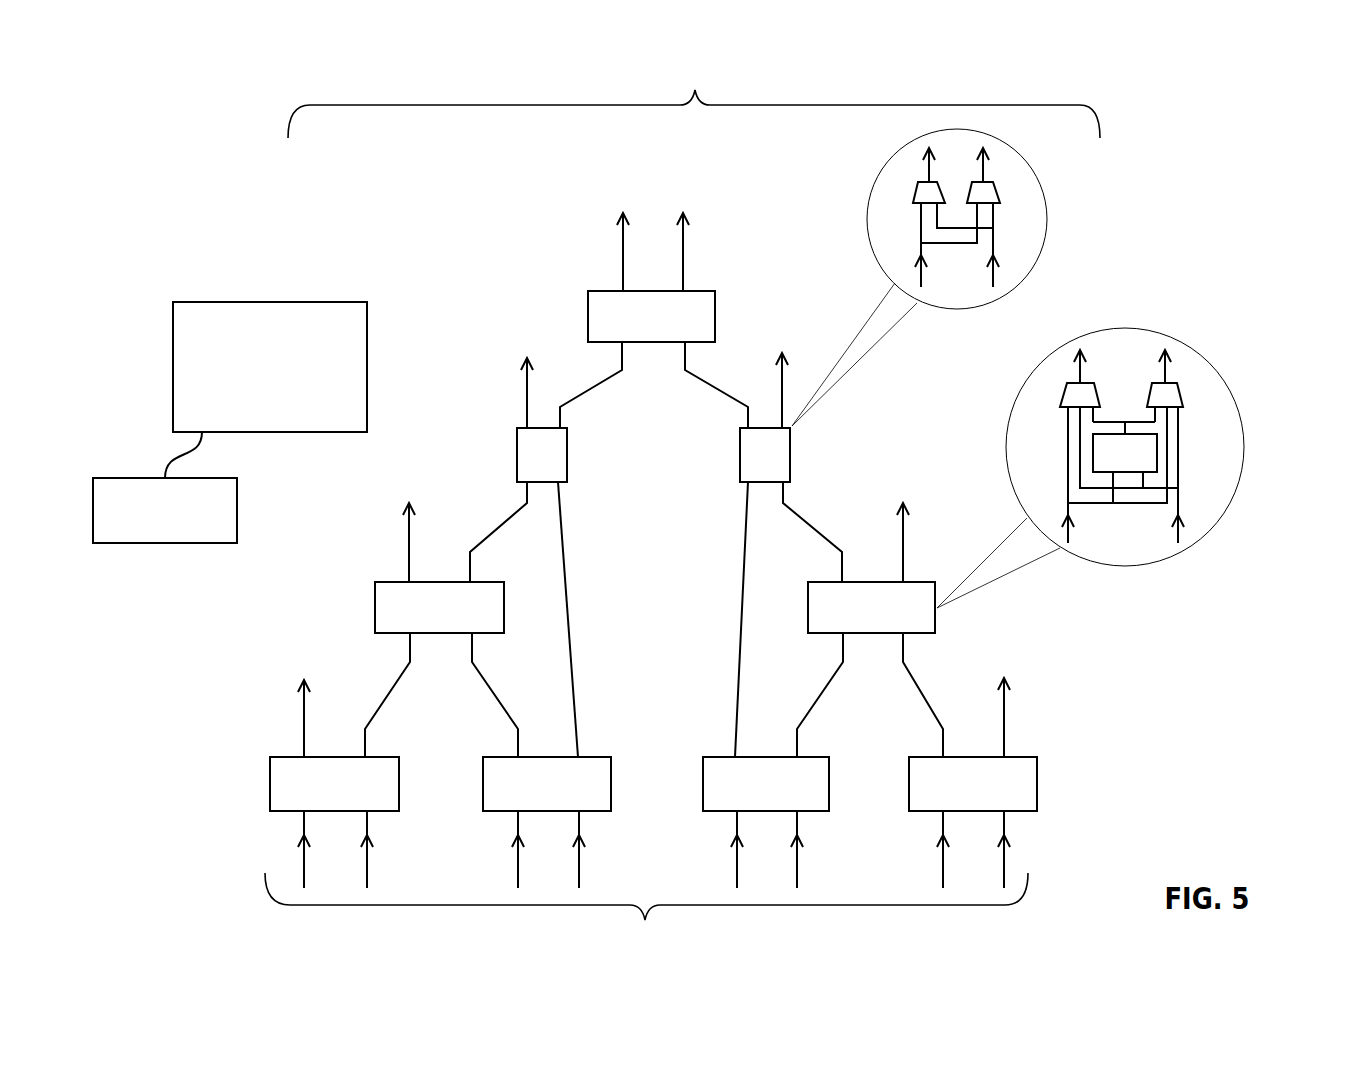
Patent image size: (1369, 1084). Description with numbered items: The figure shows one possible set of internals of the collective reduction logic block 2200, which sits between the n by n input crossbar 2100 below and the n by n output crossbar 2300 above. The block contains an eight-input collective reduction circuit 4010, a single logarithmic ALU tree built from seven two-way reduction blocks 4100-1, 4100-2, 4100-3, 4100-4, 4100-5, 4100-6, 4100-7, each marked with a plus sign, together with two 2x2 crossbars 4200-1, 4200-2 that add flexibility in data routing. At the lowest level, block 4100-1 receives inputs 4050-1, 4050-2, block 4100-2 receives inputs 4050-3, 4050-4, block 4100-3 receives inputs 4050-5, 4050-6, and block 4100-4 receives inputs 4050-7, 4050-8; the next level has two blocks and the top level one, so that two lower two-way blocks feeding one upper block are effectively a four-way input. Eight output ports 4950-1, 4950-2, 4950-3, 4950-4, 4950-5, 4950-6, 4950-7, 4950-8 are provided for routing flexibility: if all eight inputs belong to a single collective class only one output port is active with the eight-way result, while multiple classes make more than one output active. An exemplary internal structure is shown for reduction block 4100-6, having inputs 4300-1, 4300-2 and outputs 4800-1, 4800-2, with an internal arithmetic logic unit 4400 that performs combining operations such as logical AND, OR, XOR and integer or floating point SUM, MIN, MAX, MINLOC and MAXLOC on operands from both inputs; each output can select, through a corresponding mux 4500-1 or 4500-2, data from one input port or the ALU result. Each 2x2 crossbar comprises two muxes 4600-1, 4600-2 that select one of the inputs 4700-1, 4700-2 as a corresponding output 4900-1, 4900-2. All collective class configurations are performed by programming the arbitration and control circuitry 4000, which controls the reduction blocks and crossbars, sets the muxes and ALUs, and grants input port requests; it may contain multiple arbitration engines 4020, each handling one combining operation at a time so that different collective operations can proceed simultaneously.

The collective reduction logic block 2200 is at (258, 260).
The eight-input collective reduction circuit 4010 is at (440, 256).
The arbitration and control circuitry 4000 is at (367, 370).
The arbitration engine 4020 is at (165, 487).
The n by n output crossbar 2300 is at (694, 96).
The n by n input crossbar 2100 is at (646, 910).
The two-way reduction block 4100-1 is at (399, 766).
The two-way reduction block 4100-2 is at (583, 758).
The two-way reduction block 4100-3 is at (829, 773).
The two-way reduction block 4100-4 is at (1037, 763).
The two-way reduction block 4100-5 is at (375, 600).
The two-way reduction block 4100-6 is at (940, 612).
The two-way reduction block 4100-7 is at (713, 318).
The 2x2 crossbar 4200-1 is at (568, 442).
The 2x2 crossbar 4200-2 is at (792, 445).
The output port 4950-1 is at (303, 727).
The output port 4950-2 is at (408, 528).
The output port 4950-3 is at (523, 400).
The output port 4950-4 is at (618, 258).
The output port 4950-5 is at (685, 258).
The output port 4950-6 is at (785, 378).
The output port 4950-7 is at (905, 530).
The output port 4950-8 is at (1005, 720).
The input 4050-1 is at (305, 818).
The input 4050-2 is at (367, 864).
The input 4050-3 is at (518, 832).
The input 4050-4 is at (582, 864).
The input 4050-5 is at (737, 817).
The input 4050-6 is at (798, 863).
The input 4050-7 is at (943, 820).
The input 4050-8 is at (1005, 863).
The mux 4600-1 is at (928, 197).
The mux 4600-2 is at (987, 192).
The crossbar output 4900-1 is at (925, 165).
The crossbar output 4900-2 is at (987, 167).
The crossbar input 4700-1 is at (920, 272).
The crossbar input 4700-2 is at (997, 272).
The mux 4500-1 is at (1073, 397).
The mux 4500-2 is at (1170, 392).
The arithmetic logic unit 4400 is at (1148, 459).
The output port 4800-1 is at (1083, 360).
The output port 4800-2 is at (1172, 368).
The input 4300-1 is at (1068, 538).
The input 4300-2 is at (1182, 527).